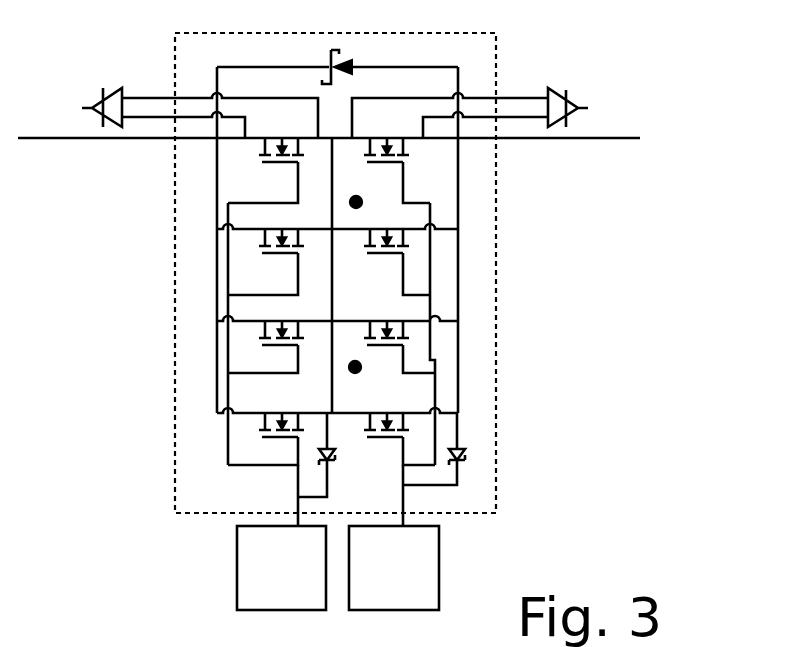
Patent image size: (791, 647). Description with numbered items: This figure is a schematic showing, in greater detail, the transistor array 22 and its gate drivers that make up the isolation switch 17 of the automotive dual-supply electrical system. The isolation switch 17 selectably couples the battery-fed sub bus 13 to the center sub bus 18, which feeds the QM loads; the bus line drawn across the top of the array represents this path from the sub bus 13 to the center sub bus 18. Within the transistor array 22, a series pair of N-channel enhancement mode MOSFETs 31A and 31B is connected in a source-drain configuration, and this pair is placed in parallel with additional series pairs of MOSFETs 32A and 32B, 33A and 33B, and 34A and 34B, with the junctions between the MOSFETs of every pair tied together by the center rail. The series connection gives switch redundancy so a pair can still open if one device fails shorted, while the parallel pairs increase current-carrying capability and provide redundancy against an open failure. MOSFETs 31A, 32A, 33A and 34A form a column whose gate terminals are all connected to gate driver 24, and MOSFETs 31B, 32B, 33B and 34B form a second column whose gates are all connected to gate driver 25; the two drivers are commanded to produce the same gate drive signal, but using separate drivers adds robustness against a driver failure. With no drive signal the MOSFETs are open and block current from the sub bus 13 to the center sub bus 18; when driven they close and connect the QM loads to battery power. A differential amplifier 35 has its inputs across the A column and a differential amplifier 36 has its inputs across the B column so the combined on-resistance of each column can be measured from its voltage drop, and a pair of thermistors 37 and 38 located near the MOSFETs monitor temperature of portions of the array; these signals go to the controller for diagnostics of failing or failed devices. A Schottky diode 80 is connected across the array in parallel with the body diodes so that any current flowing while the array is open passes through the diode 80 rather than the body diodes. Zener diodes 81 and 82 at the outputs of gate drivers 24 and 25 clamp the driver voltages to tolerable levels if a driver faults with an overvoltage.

The sub bus 13 is at (42, 136).
The isolation switch 17 is at (683, 121).
The center sub bus 18 is at (622, 136).
The transistor array 22 is at (498, 62).
The gate driver 24 is at (236, 566).
The gate driver 25 is at (440, 572).
The MOSFET 31A is at (260, 158).
The MOSFET 32A is at (260, 250).
The MOSFET 33A is at (260, 340).
The MOSFET 34A is at (262, 432).
The MOSFET 31B is at (410, 160).
The MOSFET 32B is at (410, 253).
The MOSFET 33B is at (410, 345).
The MOSFET 34B is at (410, 432).
The differential amplifier 35 is at (117, 92).
The differential amplifier 36 is at (551, 92).
The thermistor 37 is at (354, 210).
The thermistor 38 is at (360, 373).
The Schottky diode 80 is at (330, 47).
The Zener diode 81 is at (318, 458).
The Zener diode 82 is at (462, 450).